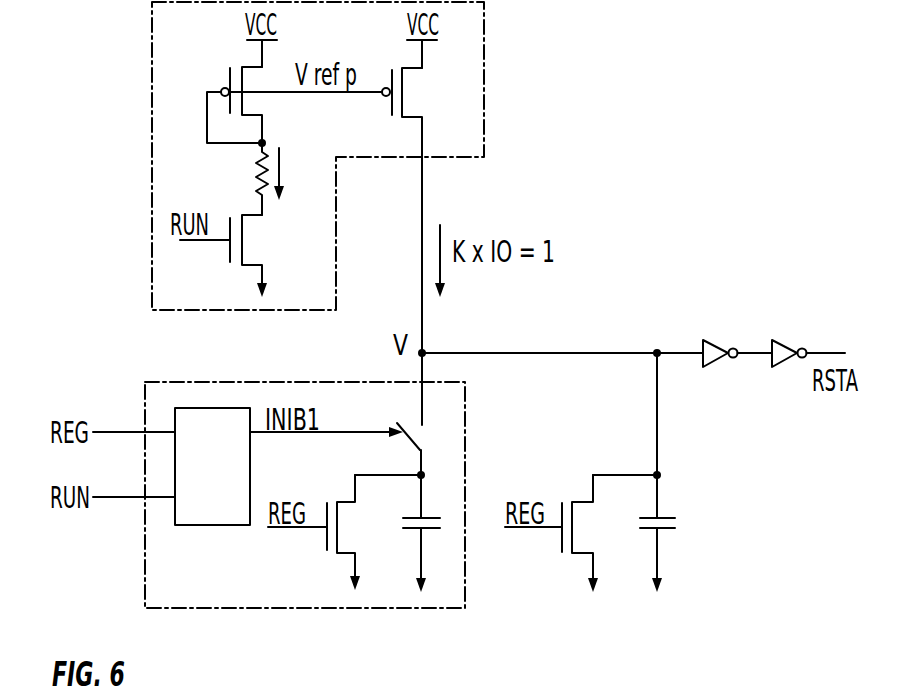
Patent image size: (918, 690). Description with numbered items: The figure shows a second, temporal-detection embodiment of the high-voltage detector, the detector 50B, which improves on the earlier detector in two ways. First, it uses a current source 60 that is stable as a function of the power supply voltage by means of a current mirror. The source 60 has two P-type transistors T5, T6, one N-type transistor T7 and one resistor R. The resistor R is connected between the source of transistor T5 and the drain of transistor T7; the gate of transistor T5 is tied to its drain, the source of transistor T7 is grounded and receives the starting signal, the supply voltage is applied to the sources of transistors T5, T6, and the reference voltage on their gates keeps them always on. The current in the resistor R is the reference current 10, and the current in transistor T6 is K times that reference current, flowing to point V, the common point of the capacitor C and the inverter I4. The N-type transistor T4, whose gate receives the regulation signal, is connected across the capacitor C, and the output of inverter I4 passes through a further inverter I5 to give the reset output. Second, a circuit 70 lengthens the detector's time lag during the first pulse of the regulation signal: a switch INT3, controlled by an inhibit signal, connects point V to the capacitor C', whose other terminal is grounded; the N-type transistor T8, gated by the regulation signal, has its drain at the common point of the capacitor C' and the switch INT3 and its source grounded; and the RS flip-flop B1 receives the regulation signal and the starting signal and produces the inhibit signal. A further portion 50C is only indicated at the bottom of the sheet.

The current source 60 is at (145, 173).
The detector 50B is at (84, 235).
The reference current I0 10 is at (292, 174).
The circuit 70 is at (145, 522).
The RS type flip-flop circuit B1 is at (200, 520).
The switch INT3 is at (408, 436).
The inverter I4 is at (712, 338).
The inverter I5 is at (782, 338).
The N-type transistor T4 is at (554, 533).
The P-type transistor T5 is at (252, 105).
The P-type transistor T6 is at (409, 210).
The N-type transistor T7 is at (228, 256).
The N-type transistor T8 is at (318, 532).
The resistor R is at (252, 179).
The capacitor C is at (660, 533).
The capacitor C' is at (424, 533).
The circuit portion 50C is at (788, 680).